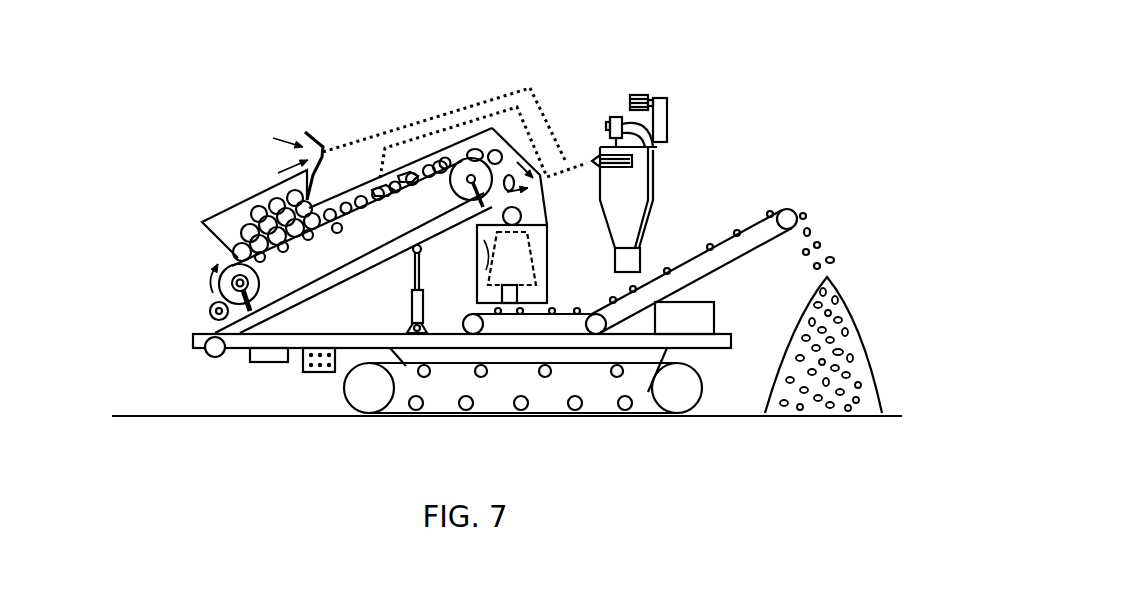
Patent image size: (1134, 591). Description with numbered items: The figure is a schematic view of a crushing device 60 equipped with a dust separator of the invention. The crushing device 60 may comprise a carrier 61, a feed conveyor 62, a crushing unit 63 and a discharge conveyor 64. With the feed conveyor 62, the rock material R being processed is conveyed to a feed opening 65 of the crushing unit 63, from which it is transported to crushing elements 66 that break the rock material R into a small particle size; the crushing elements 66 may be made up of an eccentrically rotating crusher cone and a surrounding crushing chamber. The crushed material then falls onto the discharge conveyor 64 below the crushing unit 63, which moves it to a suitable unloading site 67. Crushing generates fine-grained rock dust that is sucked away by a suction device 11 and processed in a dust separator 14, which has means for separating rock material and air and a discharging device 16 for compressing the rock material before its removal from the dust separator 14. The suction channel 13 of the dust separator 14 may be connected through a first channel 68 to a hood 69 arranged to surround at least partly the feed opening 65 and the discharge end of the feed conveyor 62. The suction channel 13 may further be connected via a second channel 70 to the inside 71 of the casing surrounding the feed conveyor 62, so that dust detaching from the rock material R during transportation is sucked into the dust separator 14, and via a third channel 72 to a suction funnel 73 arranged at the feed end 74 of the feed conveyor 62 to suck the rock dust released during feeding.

The crushing device 60 is at (322, 72).
The carrier 61 is at (594, 423).
The feed conveyor 62 is at (162, 247).
The crushing unit 63 is at (550, 253).
The discharge conveyor 64 is at (705, 230).
The feed opening 65 is at (480, 275).
The crushing elements 66 is at (410, 303).
The unloading site 67 is at (858, 262).
The first channel 68 is at (558, 160).
The hood 69 is at (513, 140).
The second channel 70 is at (541, 98).
The inside of the casing 71 is at (418, 165).
The third channel 72 is at (497, 97).
The suction funnel 73 is at (325, 133).
The feed end 74 is at (228, 167).
The rock material R is at (245, 220).
The suction device 11 is at (643, 80).
The suction channel 13 is at (583, 150).
The dust separator 14 is at (690, 143).
The discharging device 16 is at (615, 258).